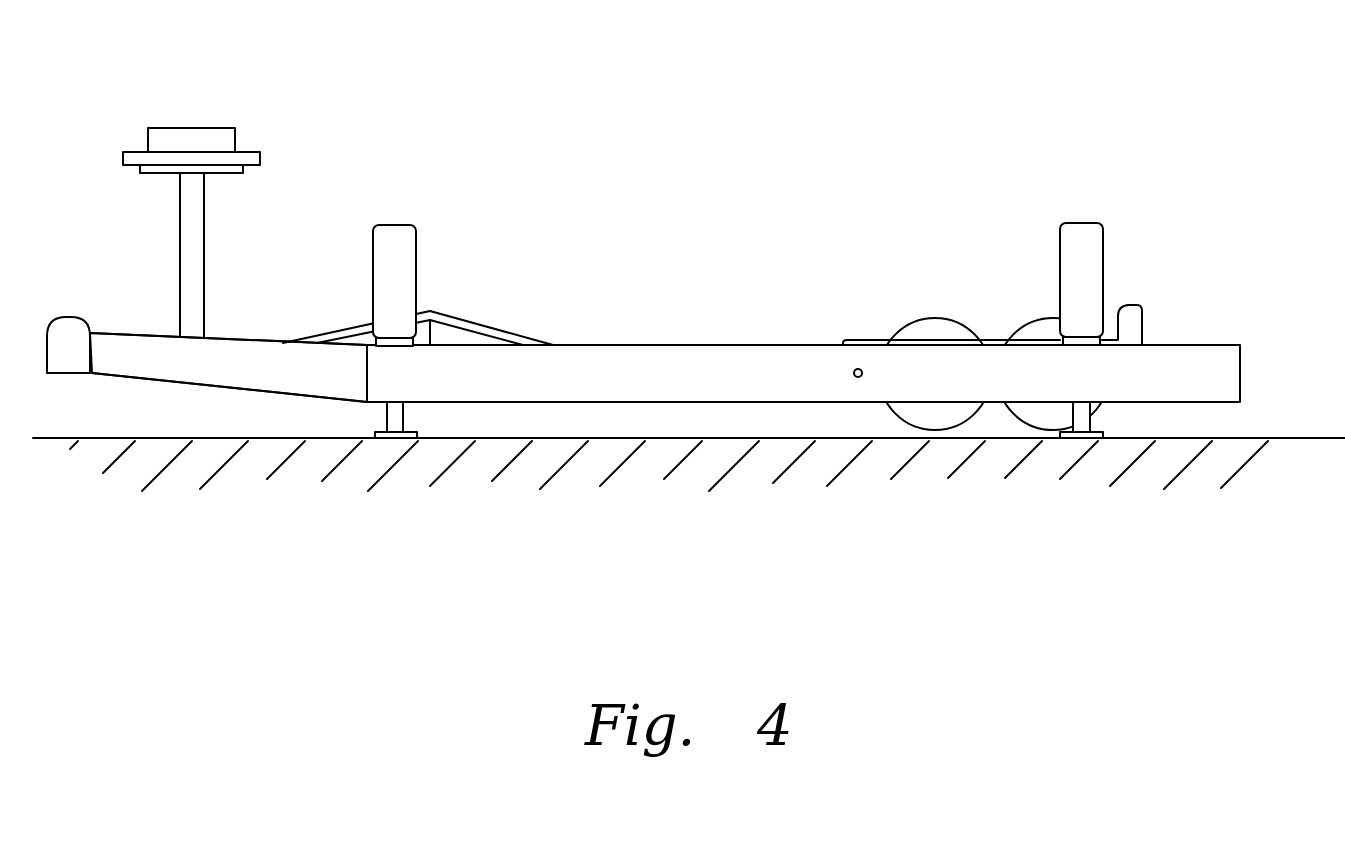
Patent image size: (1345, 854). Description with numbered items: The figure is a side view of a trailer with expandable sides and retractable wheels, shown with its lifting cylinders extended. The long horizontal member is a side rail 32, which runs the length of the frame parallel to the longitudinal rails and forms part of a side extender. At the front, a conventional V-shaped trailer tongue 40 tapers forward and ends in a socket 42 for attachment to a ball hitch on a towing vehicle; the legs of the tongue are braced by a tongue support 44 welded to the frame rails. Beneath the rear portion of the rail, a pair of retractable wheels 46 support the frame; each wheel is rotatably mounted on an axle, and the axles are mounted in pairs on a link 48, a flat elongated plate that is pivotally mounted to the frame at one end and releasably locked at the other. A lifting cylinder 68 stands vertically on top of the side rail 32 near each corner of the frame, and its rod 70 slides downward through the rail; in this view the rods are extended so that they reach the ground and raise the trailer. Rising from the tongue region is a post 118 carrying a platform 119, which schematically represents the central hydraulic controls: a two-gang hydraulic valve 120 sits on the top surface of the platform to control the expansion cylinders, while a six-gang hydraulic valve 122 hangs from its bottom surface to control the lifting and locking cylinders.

The side rail 32 is at (620, 345).
The trailer tongue 40 is at (120, 333).
The socket 42 is at (71, 318).
The tongue support 44 is at (457, 313).
The retractable wheel 46 is at (1025, 326).
The link 48 is at (1138, 305).
The lifting cylinder 68 is at (394, 222).
The rod 70 is at (403, 417).
The post 118 is at (205, 277).
The platform 119 is at (260, 158).
The two-gang hydraulic valve 120 is at (163, 128).
The six-gang hydraulic valve 122 is at (222, 175).